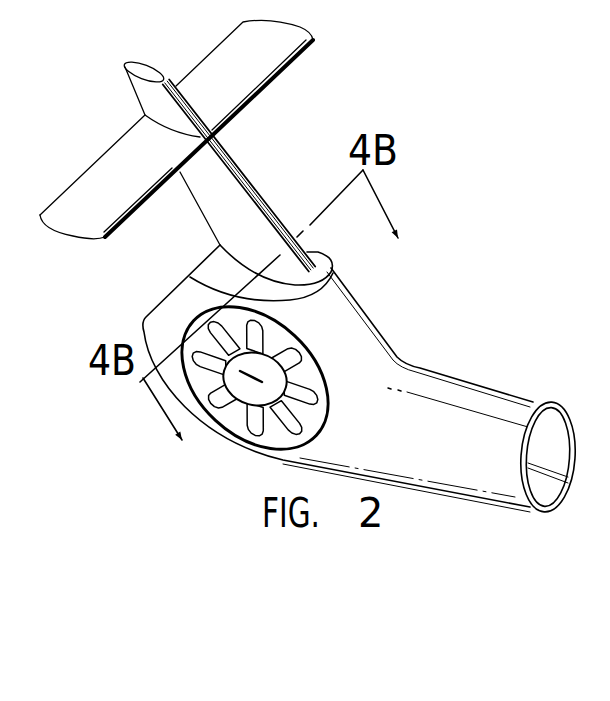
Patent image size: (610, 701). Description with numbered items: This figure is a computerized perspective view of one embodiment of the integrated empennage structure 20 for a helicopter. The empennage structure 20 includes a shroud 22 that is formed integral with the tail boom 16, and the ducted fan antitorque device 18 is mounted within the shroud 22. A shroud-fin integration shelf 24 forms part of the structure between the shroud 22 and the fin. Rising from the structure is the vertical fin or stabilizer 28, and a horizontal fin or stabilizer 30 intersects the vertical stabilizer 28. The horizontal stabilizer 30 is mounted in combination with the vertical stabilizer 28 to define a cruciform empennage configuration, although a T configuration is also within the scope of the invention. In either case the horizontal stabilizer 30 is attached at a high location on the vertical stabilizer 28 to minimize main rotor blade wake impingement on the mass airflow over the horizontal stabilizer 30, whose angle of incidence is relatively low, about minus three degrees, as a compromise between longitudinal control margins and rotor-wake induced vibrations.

The tail boom 16 is at (497, 385).
The ducted fan antitorque device 18 is at (243, 418).
The empennage structure 20 is at (145, 303).
The shroud 22 is at (395, 333).
The shroud-fin integration shelf 24 is at (212, 262).
The vertical stabilizer 28 is at (237, 193).
The horizontal stabilizer 30 is at (220, 67).